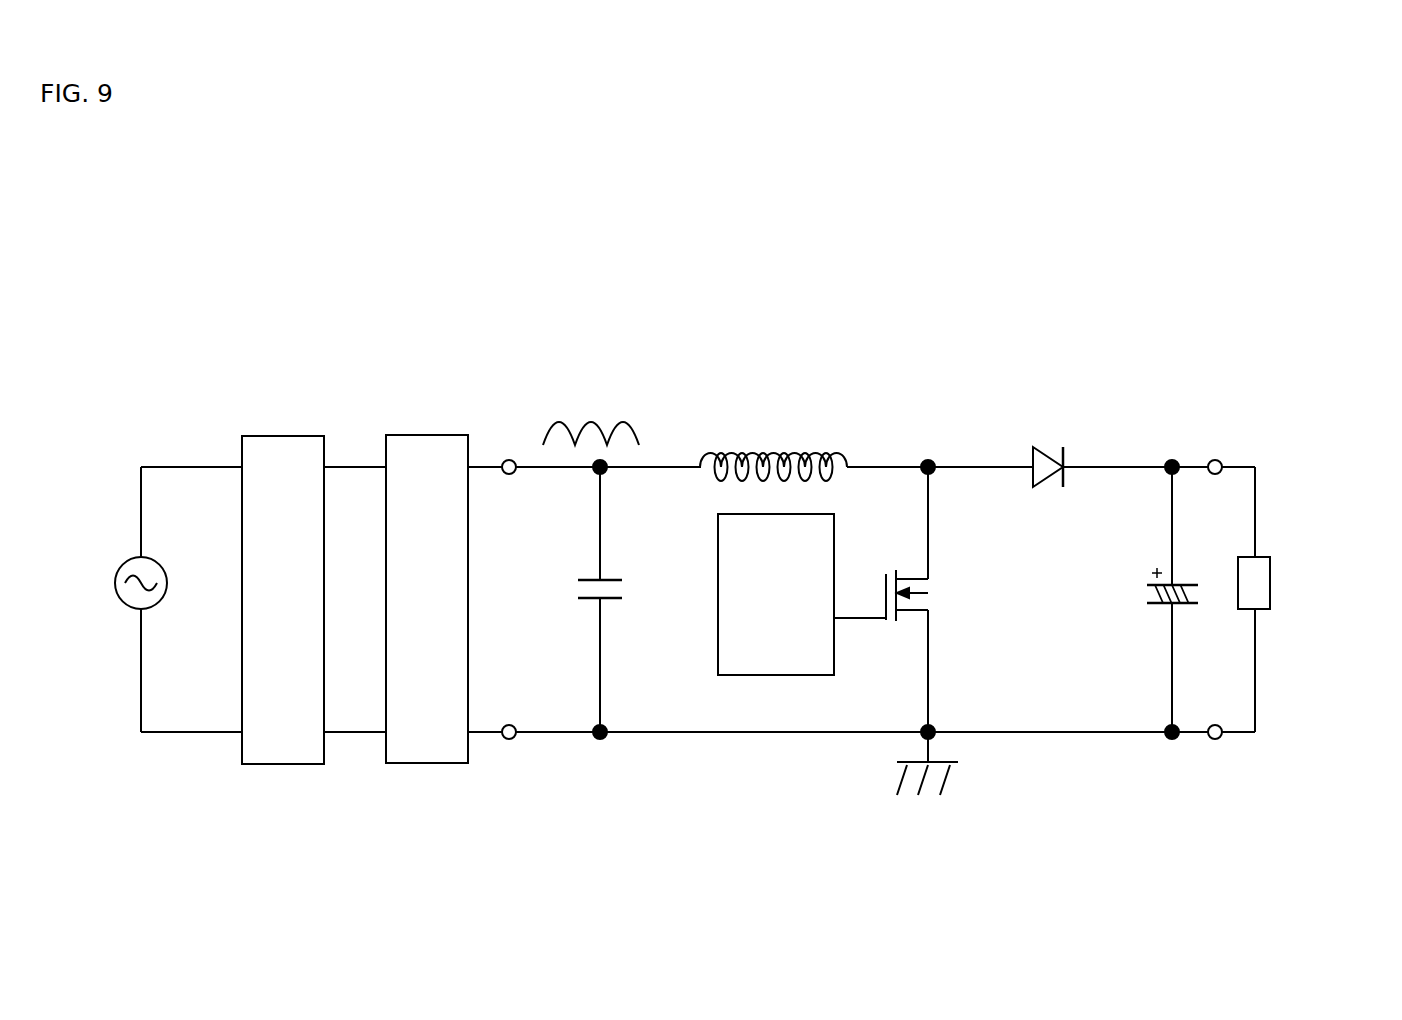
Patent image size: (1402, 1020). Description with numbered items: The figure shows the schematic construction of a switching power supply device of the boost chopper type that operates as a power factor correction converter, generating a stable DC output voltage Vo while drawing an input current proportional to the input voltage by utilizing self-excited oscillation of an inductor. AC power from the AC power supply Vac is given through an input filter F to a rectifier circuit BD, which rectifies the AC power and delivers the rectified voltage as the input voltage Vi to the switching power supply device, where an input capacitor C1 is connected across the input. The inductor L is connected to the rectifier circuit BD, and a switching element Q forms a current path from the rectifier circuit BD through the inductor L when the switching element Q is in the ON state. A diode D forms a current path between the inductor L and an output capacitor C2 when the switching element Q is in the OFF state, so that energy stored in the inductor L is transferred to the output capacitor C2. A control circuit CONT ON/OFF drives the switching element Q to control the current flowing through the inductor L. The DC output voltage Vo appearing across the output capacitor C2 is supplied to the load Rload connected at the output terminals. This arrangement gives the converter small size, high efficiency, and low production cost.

The AC power supply Vac is at (118, 566).
The input filter F is at (290, 436).
The rectifier circuit BD is at (427, 578).
The input voltage Vi is at (591, 468).
The input capacitor C1 is at (625, 584).
The inductor L is at (768, 444).
The control circuit CONT is at (802, 619).
The switching element Q is at (899, 577).
The diode D is at (1050, 445).
The output capacitor C2 is at (1150, 580).
The DC output voltage Vo is at (1282, 466).
The load Rload is at (1303, 583).